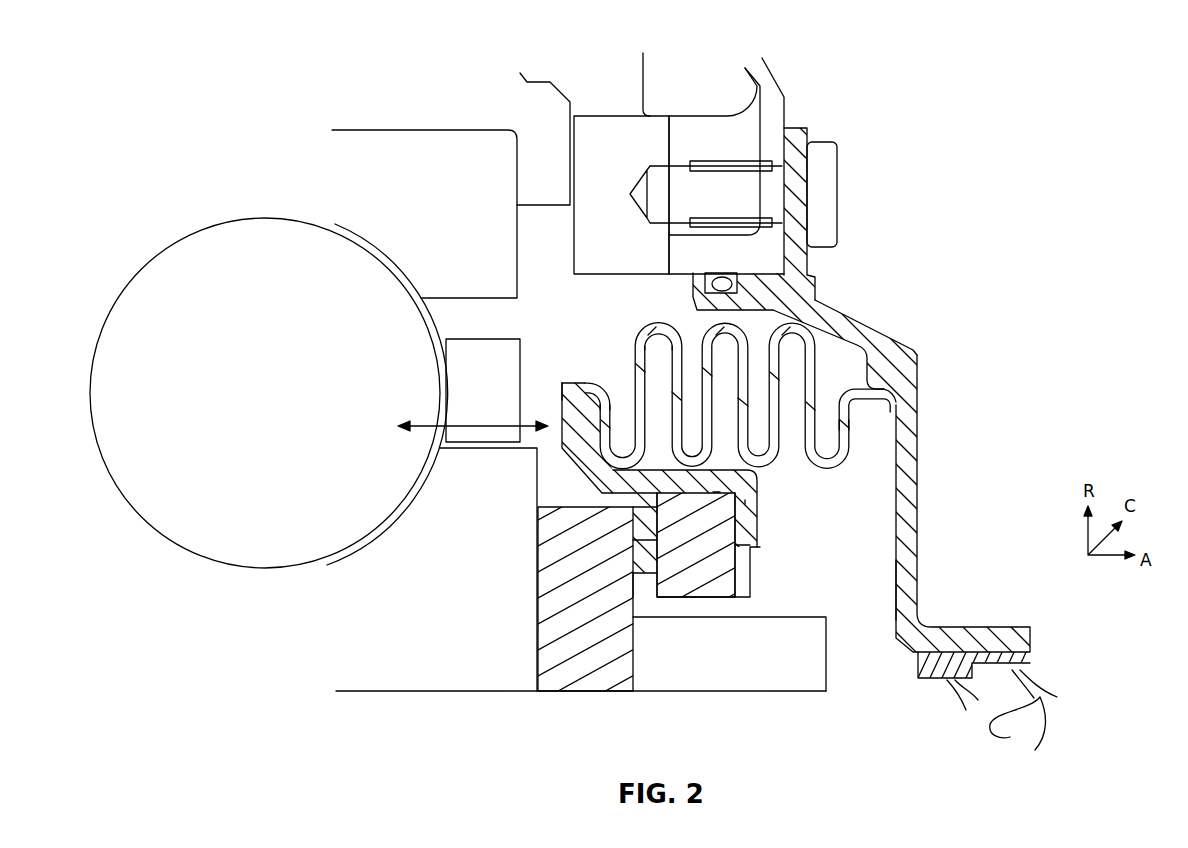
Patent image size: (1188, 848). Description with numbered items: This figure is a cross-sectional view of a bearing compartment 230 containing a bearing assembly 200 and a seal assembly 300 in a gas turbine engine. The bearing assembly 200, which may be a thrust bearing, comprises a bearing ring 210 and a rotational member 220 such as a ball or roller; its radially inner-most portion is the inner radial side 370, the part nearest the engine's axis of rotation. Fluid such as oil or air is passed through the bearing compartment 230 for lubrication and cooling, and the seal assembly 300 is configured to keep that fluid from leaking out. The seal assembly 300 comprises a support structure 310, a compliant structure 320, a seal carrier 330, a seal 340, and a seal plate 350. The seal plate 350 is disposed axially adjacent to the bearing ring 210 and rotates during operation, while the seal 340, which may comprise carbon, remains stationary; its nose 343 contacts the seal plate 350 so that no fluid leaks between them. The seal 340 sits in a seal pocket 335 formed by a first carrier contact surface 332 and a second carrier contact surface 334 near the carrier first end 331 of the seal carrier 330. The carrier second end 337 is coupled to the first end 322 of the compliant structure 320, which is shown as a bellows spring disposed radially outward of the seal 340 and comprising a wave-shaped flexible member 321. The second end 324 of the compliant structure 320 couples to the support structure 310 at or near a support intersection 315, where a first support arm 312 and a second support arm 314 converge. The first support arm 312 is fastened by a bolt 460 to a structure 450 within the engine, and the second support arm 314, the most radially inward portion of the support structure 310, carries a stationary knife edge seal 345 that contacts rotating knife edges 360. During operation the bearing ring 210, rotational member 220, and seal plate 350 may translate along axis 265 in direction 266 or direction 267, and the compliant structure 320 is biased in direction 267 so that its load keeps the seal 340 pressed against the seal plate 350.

The bearing assembly 200 is at (318, 152).
The bearing ring 210 is at (457, 130).
The rotational member 220 is at (269, 393).
The bearing compartment 230 is at (568, 331).
The axis 265 is at (485, 428).
The direction 266 is at (541, 427).
The direction 267 is at (418, 424).
The seal assembly 300 is at (903, 254).
The support structure 310 is at (918, 440).
The first support arm 312 is at (815, 303).
The second support arm 314 is at (918, 578).
The support intersection 315 is at (895, 354).
The compliant structure 320 is at (648, 326).
The flexible member 321 is at (680, 332).
The first end 322 is at (598, 381).
The second end 324 is at (858, 398).
The seal carrier 330 is at (575, 450).
The carrier first end 331 is at (743, 590).
The first carrier contact surface 332 is at (713, 492).
The second carrier contact surface 334 is at (757, 545).
The seal pocket 335 is at (745, 500).
The carrier second end 337 is at (568, 392).
The seal 340 is at (700, 578).
The nose 343 is at (640, 570).
The knife edge seal 345 is at (1030, 660).
The seal plate 350 is at (573, 645).
The knife edges 360 is at (1006, 725).
The inner radial side 370 is at (486, 728).
The structure 450 is at (778, 97).
The bolt 460 is at (826, 162).